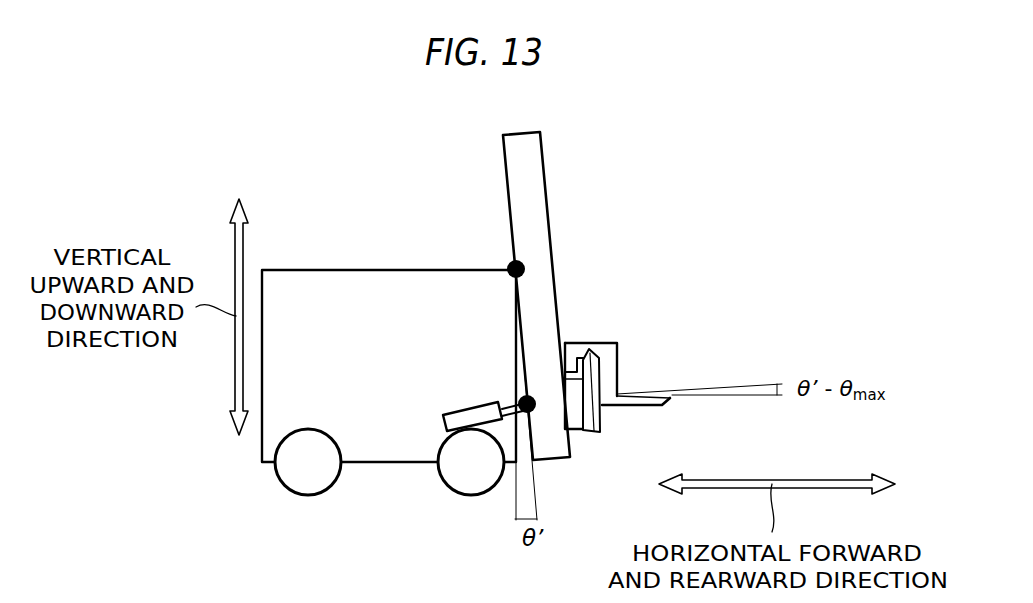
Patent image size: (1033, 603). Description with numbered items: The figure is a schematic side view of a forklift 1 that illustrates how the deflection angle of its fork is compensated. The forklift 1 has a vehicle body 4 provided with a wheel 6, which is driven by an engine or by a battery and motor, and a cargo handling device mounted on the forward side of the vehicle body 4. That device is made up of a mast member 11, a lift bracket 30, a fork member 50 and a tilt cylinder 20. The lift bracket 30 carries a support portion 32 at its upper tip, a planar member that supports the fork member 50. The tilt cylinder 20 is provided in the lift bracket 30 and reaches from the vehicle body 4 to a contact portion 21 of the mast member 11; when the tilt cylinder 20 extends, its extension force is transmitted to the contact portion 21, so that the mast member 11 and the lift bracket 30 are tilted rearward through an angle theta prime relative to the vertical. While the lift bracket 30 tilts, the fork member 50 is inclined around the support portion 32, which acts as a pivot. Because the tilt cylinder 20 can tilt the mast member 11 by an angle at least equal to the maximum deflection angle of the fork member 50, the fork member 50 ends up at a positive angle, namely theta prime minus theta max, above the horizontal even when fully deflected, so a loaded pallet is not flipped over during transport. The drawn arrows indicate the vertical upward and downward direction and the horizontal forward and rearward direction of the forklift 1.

The forklift 1 is at (647, 191).
The vehicle body 4 is at (388, 288).
The wheel 6 is at (292, 482).
The mast member 11 is at (533, 172).
The tilt cylinder 20 is at (443, 422).
The contact portion 21 is at (536, 410).
The lift bracket 30 is at (593, 417).
The support portion 32 is at (588, 348).
The fork member 50 is at (612, 380).